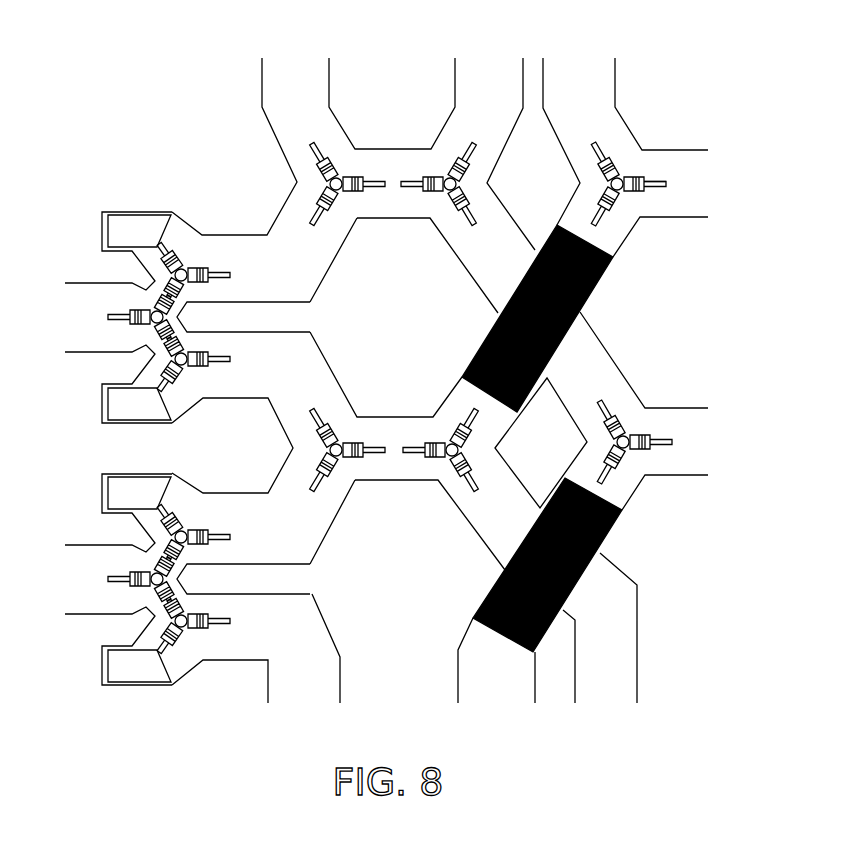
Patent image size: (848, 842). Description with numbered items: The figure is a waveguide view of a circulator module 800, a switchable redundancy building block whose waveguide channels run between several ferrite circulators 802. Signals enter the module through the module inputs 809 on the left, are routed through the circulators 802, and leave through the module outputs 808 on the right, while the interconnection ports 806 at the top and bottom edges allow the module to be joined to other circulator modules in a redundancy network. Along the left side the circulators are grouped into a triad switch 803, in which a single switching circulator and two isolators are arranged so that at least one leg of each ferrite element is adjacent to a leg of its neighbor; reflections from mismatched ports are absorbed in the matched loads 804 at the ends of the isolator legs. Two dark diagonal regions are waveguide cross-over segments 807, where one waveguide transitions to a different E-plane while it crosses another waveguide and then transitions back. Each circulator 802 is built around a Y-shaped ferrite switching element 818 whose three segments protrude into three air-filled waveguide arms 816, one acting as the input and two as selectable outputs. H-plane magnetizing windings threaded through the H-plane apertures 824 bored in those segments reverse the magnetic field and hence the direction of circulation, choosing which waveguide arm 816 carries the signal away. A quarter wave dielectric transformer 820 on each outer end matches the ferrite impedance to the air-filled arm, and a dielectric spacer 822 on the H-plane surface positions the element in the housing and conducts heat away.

The circulator module 800 is at (105, 148).
The circulator 802 is at (356, 200).
The triad switch 803 is at (232, 359).
The matched load 804 is at (103, 240).
The interconnection port 806 is at (260, 98).
The waveguide cross-over segment 807 is at (592, 295).
The module output 808 is at (698, 202).
The module input 809 is at (80, 327).
The waveguide arm 816 is at (680, 152).
The switching element 818 is at (668, 258).
The quarter wave dielectric transformer 820 is at (662, 172).
The top dielectric spacer 822 is at (645, 146).
The H-plane aperture 824 is at (594, 146).